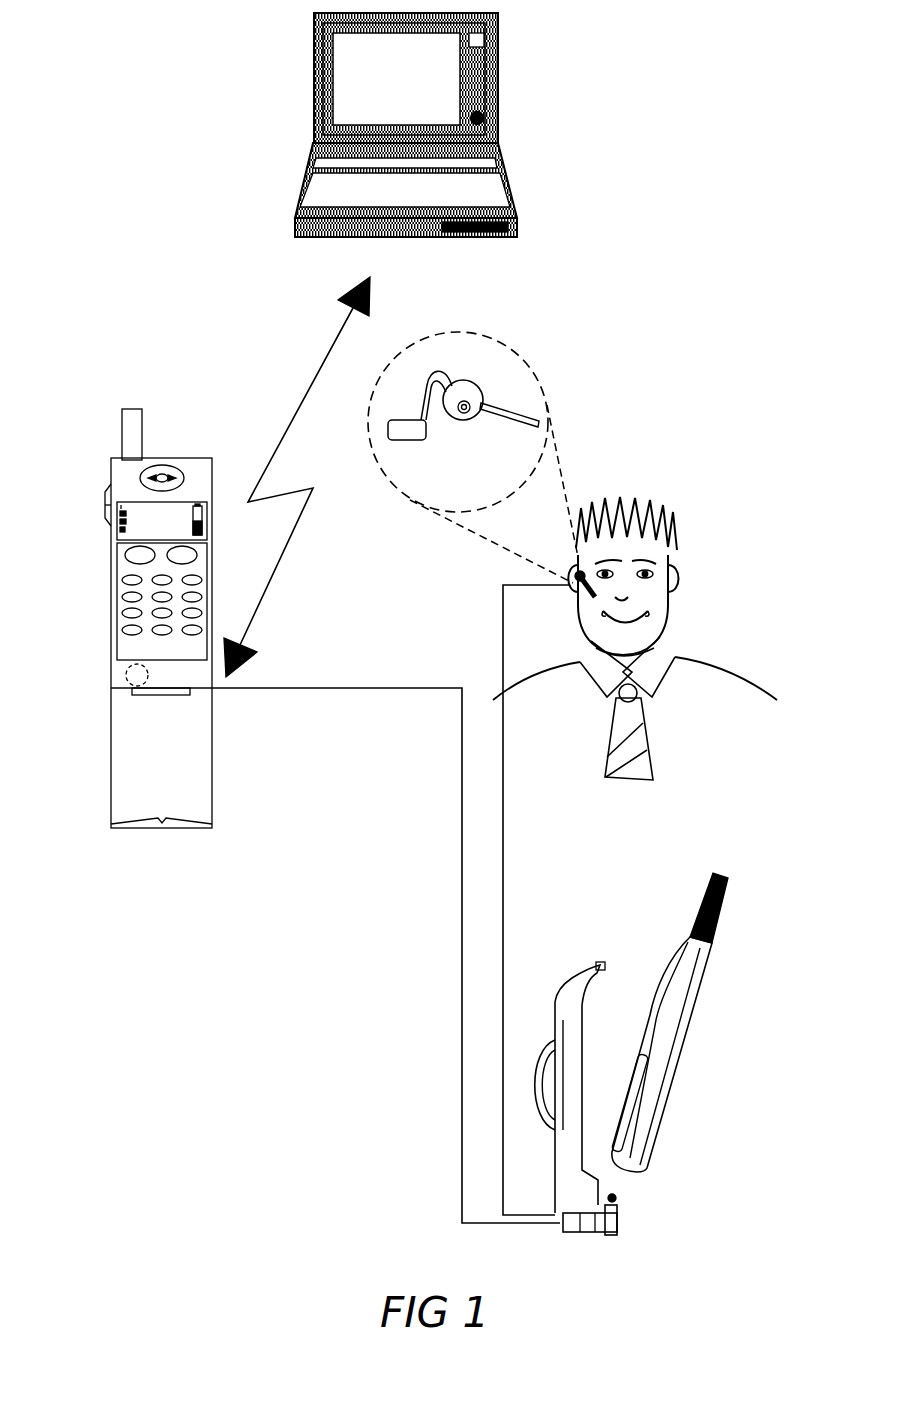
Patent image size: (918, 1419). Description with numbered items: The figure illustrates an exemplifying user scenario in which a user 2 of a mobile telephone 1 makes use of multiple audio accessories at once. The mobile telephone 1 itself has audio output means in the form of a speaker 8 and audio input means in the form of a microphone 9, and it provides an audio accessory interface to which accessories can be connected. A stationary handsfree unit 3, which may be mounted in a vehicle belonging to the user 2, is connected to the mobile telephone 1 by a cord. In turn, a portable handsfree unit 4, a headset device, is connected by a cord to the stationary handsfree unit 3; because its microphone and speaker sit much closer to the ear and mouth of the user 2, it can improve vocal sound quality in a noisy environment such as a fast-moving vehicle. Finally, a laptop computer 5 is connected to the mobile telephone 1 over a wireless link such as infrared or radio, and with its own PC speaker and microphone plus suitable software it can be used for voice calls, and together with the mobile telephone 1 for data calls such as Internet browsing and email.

The mobile telephone 1 is at (161, 938).
The user 2 is at (760, 656).
The stationary handsfree unit 3 is at (703, 1299).
The portable handsfree unit 4 is at (618, 449).
The laptop computer 5 is at (575, 142).
The speaker 8 is at (167, 472).
The microphone 9 is at (127, 673).